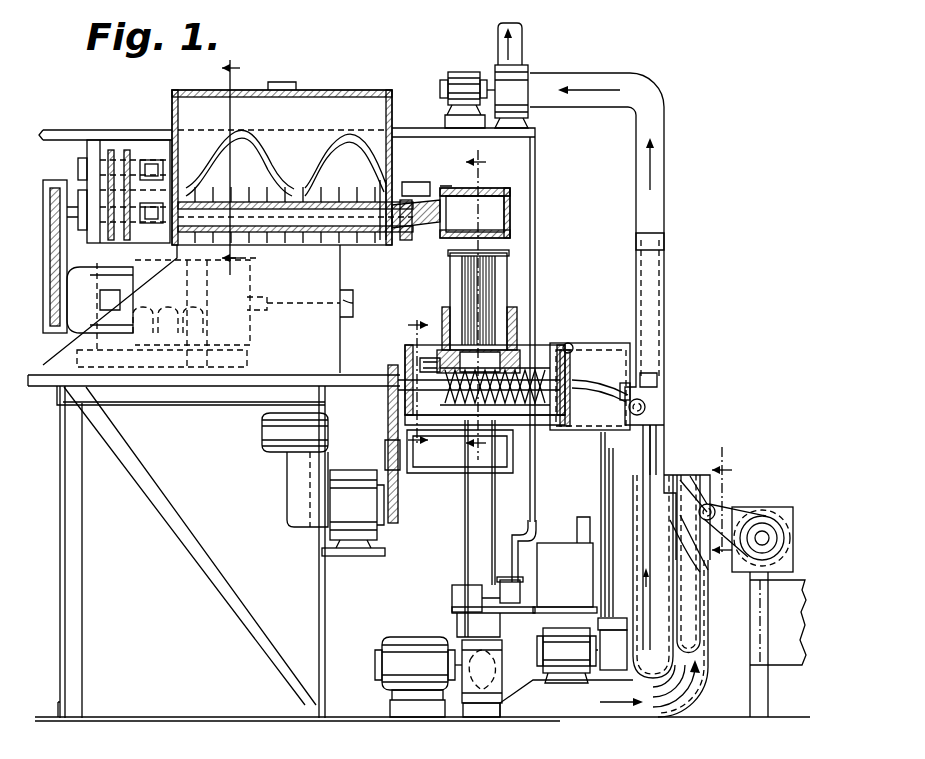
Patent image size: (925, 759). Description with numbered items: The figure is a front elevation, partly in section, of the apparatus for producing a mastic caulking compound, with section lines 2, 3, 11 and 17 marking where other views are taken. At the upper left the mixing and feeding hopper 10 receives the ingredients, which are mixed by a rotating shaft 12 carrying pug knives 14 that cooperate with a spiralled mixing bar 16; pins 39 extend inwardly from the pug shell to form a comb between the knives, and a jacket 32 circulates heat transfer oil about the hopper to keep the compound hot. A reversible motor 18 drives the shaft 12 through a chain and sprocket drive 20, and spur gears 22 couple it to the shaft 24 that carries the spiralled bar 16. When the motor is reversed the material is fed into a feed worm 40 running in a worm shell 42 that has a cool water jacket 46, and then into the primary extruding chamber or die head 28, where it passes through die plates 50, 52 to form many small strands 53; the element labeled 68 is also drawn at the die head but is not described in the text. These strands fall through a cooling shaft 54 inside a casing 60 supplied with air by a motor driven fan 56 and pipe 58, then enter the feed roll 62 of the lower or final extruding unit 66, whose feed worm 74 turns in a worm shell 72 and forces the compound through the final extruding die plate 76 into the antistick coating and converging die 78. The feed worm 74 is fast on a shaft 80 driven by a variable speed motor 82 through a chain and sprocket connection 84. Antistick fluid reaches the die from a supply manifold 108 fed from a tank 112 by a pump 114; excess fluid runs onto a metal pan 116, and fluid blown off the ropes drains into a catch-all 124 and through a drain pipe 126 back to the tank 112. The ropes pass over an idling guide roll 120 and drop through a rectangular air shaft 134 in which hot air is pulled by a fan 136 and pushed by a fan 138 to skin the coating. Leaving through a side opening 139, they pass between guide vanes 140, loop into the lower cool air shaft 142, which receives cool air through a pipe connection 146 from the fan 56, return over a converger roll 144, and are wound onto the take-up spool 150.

The section line 2- 2 is at (242, 160).
The section line 3- 3 is at (480, 303).
The mixing and feeding hopper 10 is at (320, 84).
The section line 11- 11 is at (425, 383).
The rotating shaft 12 is at (262, 263).
The pug knives 14 is at (236, 196).
The spiralled mixing bar 16 is at (262, 160).
The section line 17- 17 is at (728, 509).
The reversible motor 18 is at (240, 333).
The chain and sprocket drive 20 is at (58, 240).
The spur gears 22 is at (108, 182).
The shaft 24 is at (138, 150).
The primary extruding chamber or die head 28 is at (512, 190).
The jacket 32 is at (340, 300).
The pins 39 is at (290, 205).
The feed worm 40 is at (420, 186).
The worm shell 42 is at (408, 242).
The jacket 46 is at (430, 215).
The die plate 50 is at (505, 215).
The die plate 52 is at (510, 236).
The small strands 53 is at (496, 265).
The cooling shaft 54 is at (508, 280).
The motor driven fan 56 is at (466, 642).
The pipe 58 is at (466, 550).
The casing 60 is at (518, 312).
The feed roll 62 is at (520, 340).
The lower or final extruding unit 66 is at (575, 318).
The chamber top plate 68 is at (478, 200).
The worm shell 72 is at (484, 414).
The feed worm 74 is at (465, 400).
The final extruding die plate 76 is at (572, 345).
The antistick coating and converging die 78 is at (584, 376).
The shaft 80 is at (373, 444).
The variable speed motor 82 is at (340, 470).
The chain and sprocket connection 84 is at (386, 437).
The supply manifold 108 is at (582, 358).
The tank 112 is at (565, 565).
The pump 114 is at (522, 598).
The metal pan 116 is at (530, 520).
The idling guide roll 120 is at (650, 400).
The catch-all 124 is at (604, 442).
The drain pipe 126 is at (612, 464).
The rectangular air shaft 134 is at (652, 462).
The fan 136 is at (528, 68).
The fan 138 is at (592, 632).
The side opening 139 is at (698, 486).
The guide vanes 140 is at (705, 575).
The lower cool air shaft 142 is at (698, 648).
The converger roll 144 is at (715, 505).
The pipe connection 146 is at (565, 718).
The take-up spool 150 is at (758, 510).